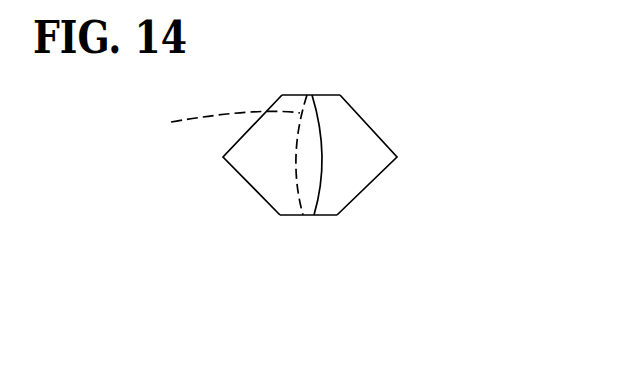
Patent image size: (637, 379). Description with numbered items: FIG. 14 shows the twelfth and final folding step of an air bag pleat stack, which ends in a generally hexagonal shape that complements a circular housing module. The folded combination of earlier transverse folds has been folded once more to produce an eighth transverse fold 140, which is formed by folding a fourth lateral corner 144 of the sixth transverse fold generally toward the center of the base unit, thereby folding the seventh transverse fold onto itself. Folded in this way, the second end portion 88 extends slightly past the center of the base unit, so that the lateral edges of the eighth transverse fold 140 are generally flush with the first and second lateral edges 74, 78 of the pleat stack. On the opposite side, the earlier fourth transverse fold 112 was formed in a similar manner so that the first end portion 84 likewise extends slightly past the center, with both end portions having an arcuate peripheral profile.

The first lateral edge 74 is at (310, 95).
The second lateral edge 78 is at (287, 217).
The first end portion 84 is at (221, 120).
The second end portion 88 is at (320, 180).
The fourth transverse fold 112 is at (347, 138).
The eighth transverse fold 140 is at (263, 173).
The fourth lateral corner 144 is at (313, 216).